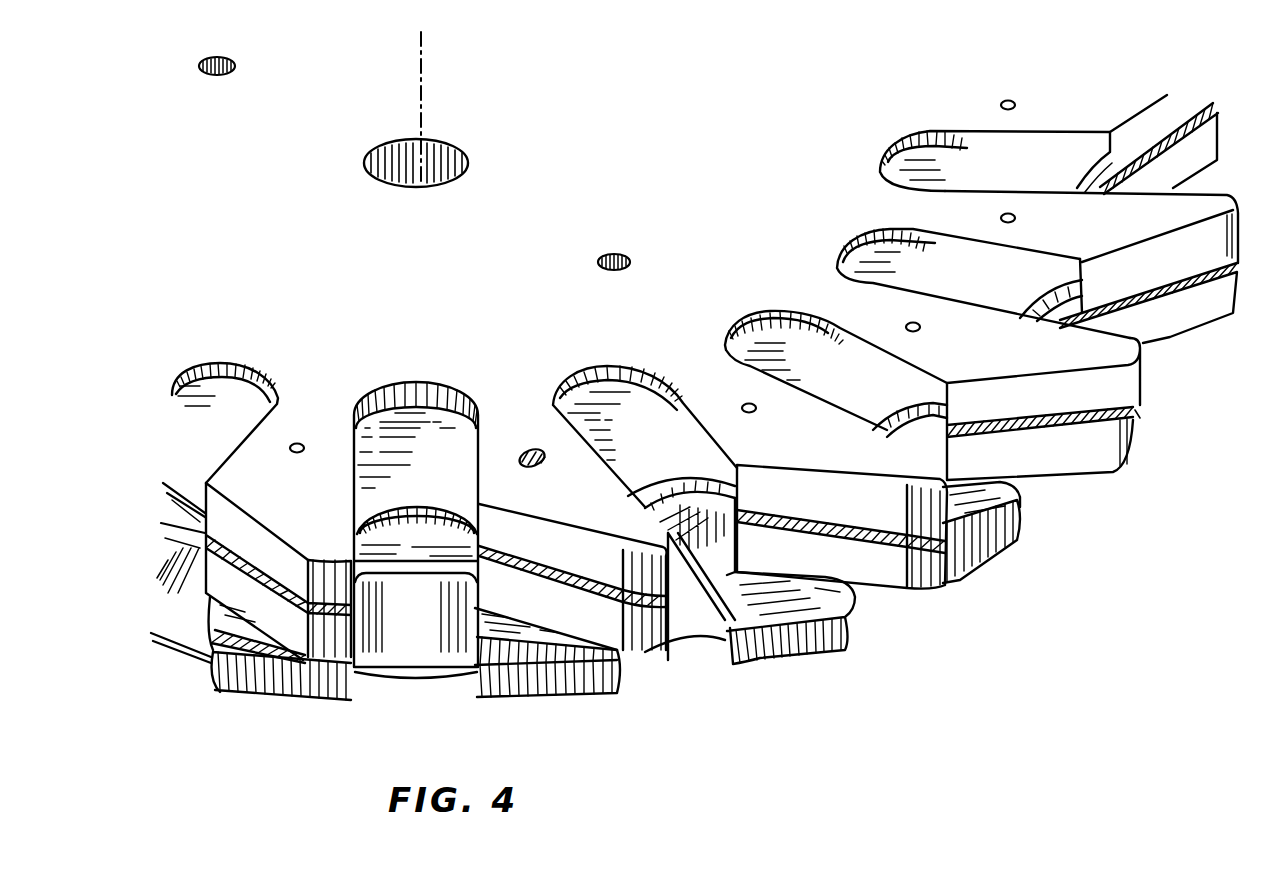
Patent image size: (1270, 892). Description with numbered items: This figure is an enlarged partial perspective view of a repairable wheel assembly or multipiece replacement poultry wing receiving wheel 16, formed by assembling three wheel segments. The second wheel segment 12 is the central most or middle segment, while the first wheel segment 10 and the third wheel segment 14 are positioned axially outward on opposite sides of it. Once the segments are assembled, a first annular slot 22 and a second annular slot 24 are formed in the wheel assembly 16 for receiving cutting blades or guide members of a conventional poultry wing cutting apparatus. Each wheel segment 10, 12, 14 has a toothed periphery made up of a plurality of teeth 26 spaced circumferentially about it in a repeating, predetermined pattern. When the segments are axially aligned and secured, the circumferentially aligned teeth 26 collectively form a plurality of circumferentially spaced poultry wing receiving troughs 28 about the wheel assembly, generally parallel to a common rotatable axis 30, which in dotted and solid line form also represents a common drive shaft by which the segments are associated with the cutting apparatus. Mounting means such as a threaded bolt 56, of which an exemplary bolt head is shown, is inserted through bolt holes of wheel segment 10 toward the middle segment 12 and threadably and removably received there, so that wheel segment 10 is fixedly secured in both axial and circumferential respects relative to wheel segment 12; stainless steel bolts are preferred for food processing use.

The first wheel segment 10 is at (299, 270).
The second wheel segment 12 is at (1093, 472).
The third wheel segment 14 is at (279, 698).
The wheel assembly 16 is at (985, 670).
The first annular slot 22 is at (902, 540).
The second annular slot 24 is at (730, 655).
The teeth 26 is at (655, 678).
The poultry wing receiving troughs 28 is at (418, 672).
The common rotatable axis 30 is at (428, 100).
The threaded bolt 56 is at (536, 464).